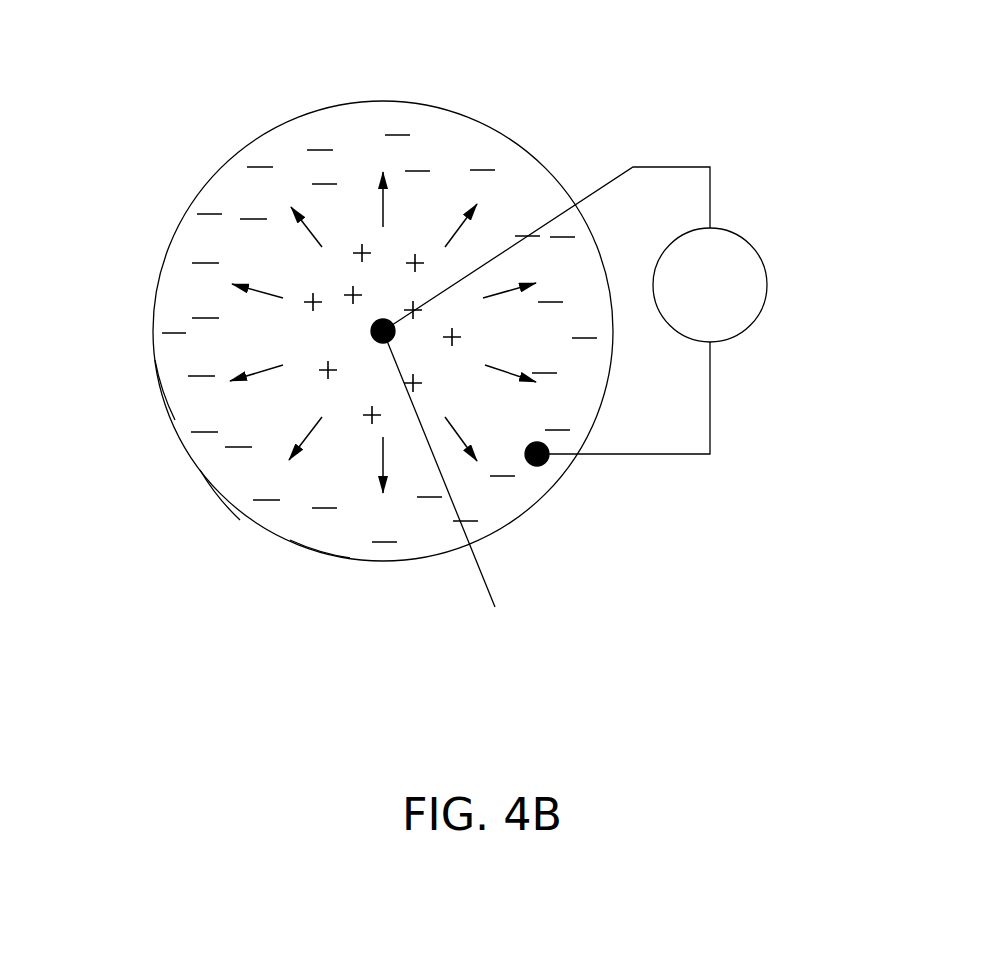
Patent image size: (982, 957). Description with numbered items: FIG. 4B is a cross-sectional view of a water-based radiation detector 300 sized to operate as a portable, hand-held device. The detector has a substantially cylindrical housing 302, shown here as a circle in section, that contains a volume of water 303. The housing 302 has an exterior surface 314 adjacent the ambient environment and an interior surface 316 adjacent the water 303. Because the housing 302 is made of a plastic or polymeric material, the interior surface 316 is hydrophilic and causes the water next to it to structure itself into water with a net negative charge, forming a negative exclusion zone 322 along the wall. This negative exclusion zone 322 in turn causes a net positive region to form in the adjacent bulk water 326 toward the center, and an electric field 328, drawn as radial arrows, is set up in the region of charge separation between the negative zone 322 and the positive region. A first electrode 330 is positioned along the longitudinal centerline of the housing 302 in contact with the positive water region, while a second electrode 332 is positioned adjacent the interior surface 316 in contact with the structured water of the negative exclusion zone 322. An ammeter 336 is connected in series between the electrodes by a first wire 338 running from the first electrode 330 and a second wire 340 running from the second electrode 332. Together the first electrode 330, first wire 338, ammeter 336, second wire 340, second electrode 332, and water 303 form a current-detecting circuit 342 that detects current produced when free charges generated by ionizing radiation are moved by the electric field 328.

The radiation detector 300 is at (750, 136).
The housing 302 is at (203, 160).
The water 303 is at (452, 180).
The exterior surface 314 is at (208, 500).
The interior surface 316 is at (152, 397).
The negative exclusion zone 322 is at (310, 540).
The bulk water 326 is at (380, 252).
The electric field 328 is at (283, 298).
The first electrode 330 is at (490, 585).
The second electrode 332 is at (540, 466).
The ammeter 336 is at (765, 265).
The first wire 338 is at (662, 167).
The second wire 340 is at (712, 407).
The current-detecting circuit 342 is at (710, 484).